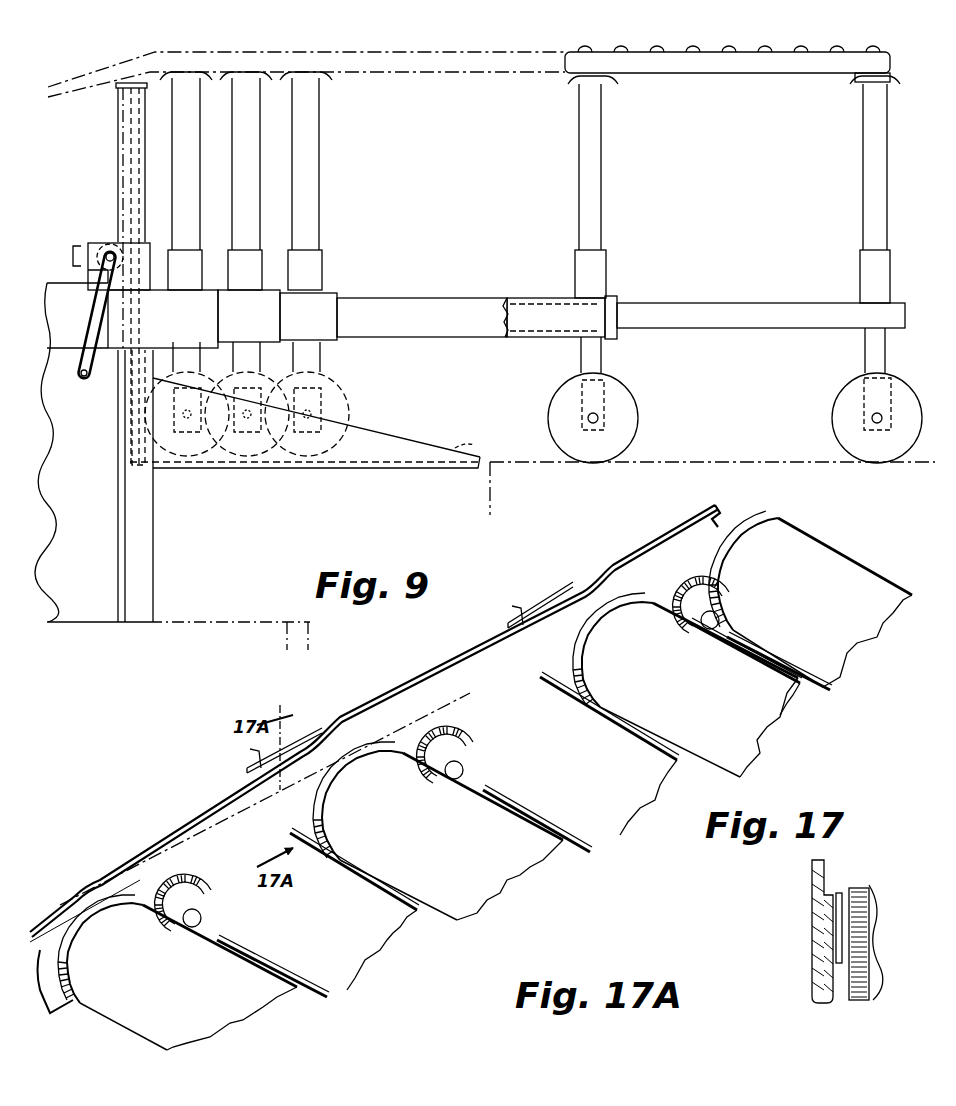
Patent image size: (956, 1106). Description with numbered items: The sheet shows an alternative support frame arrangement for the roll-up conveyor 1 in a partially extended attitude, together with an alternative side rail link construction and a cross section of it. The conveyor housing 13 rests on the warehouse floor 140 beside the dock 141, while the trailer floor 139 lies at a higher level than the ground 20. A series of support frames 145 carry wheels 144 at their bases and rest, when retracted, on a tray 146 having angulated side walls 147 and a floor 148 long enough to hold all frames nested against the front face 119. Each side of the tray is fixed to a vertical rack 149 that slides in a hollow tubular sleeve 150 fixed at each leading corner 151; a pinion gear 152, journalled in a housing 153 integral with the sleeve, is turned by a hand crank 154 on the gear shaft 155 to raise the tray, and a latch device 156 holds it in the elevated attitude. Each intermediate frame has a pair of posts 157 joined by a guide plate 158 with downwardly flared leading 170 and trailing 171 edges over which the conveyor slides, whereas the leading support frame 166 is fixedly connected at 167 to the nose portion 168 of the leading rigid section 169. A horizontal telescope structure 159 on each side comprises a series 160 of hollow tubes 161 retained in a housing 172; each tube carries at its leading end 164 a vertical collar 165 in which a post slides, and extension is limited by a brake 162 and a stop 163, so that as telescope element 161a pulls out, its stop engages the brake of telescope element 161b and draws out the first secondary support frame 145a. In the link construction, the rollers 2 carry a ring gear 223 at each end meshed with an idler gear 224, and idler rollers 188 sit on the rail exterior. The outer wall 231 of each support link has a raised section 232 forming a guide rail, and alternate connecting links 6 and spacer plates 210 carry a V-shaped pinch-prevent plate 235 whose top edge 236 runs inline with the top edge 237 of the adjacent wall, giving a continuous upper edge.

In FIG. 9, the roll-up conveyor 1 is at (75, 67).
In FIG. 17, the rollers 2 is at (667, 807).
In FIG. 17, the connecting links 6 is at (552, 603).
In FIG. 17A, the connecting links 6 is at (840, 892).
In FIG. 9, the conveyor housing 13 is at (72, 614).
In FIG. 9, the ground 20 is at (183, 626).
In FIG. 9, the front face 119 is at (118, 530).
In FIG. 9, the trailer floor 139 is at (664, 462).
In FIG. 9, the warehouse floor 140 is at (240, 622).
In FIG. 9, the dock 141 is at (303, 619).
In FIG. 9, the wheels 144 is at (343, 411).
In FIG. 9, the support frames 145 is at (324, 207).
In FIG. 9, the first secondary support frame 145a is at (610, 221).
In FIG. 9, the tray 146 is at (373, 470).
In FIG. 9, the angulated side walls 147 is at (380, 443).
In FIG. 9, the floor 148 is at (463, 440).
In FIG. 9, the rack 149 is at (123, 127).
In FIG. 9, the hollow tubular sleeve 150 is at (159, 286).
In FIG. 9, the leading corner 151 is at (322, 52).
In FIG. 9, the pinion gear 152 is at (98, 239).
In FIG. 9, the housing 153 is at (81, 273).
In FIG. 9, the hand crank 154 is at (101, 297).
In FIG. 9, the gear shaft 155 is at (110, 253).
In FIG. 9, the latch device 156 is at (72, 248).
In FIG. 9, the posts 157 is at (590, 162).
In FIG. 9, the guide plate 158 is at (245, 70).
In FIG. 9, the horizontal telescope structure 159 is at (444, 288).
In FIG. 9, the series of hollow tubes 160 is at (339, 322).
In FIG. 9, the hollow tubes 161 is at (323, 304).
In FIG. 9, the telescope element 161a is at (739, 330).
In FIG. 9, the telescope element 161b is at (462, 342).
In FIG. 9, the brake 162 is at (621, 330).
In FIG. 9, the stop 163 is at (593, 315).
In FIG. 9, the leading end 164 is at (592, 300).
In FIG. 9, the vertical collar 165 is at (588, 262).
In FIG. 9, the leading support frame 166 is at (852, 146).
In FIG. 9, the connection 167 is at (862, 75).
In FIG. 9, the nose portion 168 is at (892, 41).
In FIG. 9, the leading rigid section 169 is at (755, 73).
In FIG. 9, the leading edge 170 is at (328, 76).
In FIG. 9, the trailing edge 171 is at (292, 82).
In FIG. 9, the housing 172 is at (62, 368).
In FIG. 17, the idler rollers 188 is at (187, 833).
In FIG. 17A, the spacer plates 210 is at (815, 935).
In FIG. 17, the ring gear 223 is at (730, 578).
In FIG. 17A, the ring gear 223 is at (866, 942).
In FIG. 17, the idler gear 224 is at (687, 607).
In FIG. 17, the outer wall 231 is at (149, 825).
In FIG. 17, the raised section 232 is at (163, 813).
In FIG. 17, the pinch-prevent plate 235 is at (313, 730).
In FIG. 17A, the pinch-prevent plate 235 is at (811, 872).
In FIG. 17, the top edge 236 is at (250, 749).
In FIG. 17A, the top edge 236 is at (823, 858).
In FIG. 17, the top edge 237 is at (207, 767).